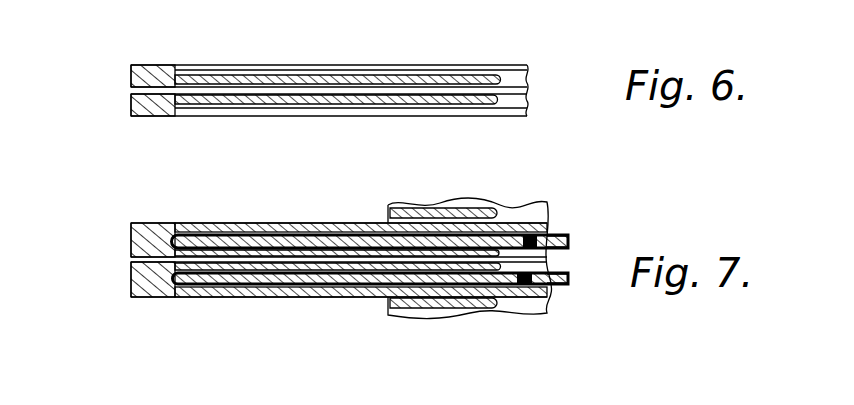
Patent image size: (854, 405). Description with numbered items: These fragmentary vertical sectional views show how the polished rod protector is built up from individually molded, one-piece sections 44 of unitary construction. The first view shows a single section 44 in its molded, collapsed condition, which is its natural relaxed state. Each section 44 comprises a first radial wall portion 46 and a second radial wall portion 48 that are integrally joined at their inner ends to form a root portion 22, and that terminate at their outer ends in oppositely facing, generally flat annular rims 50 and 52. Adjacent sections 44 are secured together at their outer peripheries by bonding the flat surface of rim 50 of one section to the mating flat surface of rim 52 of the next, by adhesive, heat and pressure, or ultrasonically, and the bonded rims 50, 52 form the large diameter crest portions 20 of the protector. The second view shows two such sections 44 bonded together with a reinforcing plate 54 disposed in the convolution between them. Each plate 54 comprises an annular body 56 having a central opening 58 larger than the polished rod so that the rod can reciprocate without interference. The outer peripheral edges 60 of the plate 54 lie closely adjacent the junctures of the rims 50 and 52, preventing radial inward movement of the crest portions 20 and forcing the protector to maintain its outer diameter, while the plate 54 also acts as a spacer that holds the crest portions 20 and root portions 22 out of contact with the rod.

In FIG. 6, the section 44 is at (295, 91).
In FIG. 6, the crest portion 20 is at (131, 101).
In FIG. 7, the crest portion 20 is at (131, 270).
In FIG. 6, the rim 50 is at (162, 67).
In FIG. 6, the rim 52 is at (150, 115).
In FIG. 6, the first radial wall portion 46 is at (330, 78).
In FIG. 7, the first radial wall portion 46 is at (213, 253).
In FIG. 6, the second radial wall portion 48 is at (325, 101).
In FIG. 7, the second radial wall portion 48 is at (275, 262).
In FIG. 6, the root portion 22 is at (503, 103).
In FIG. 7, the root portion 22 is at (515, 212).
In FIG. 7, the plate 54 is at (580, 280).
In FIG. 7, the annular body 56 is at (336, 242).
In FIG. 7, the central opening 58 is at (572, 237).
In FIG. 7, the outer peripheral edge 60 is at (131, 228).